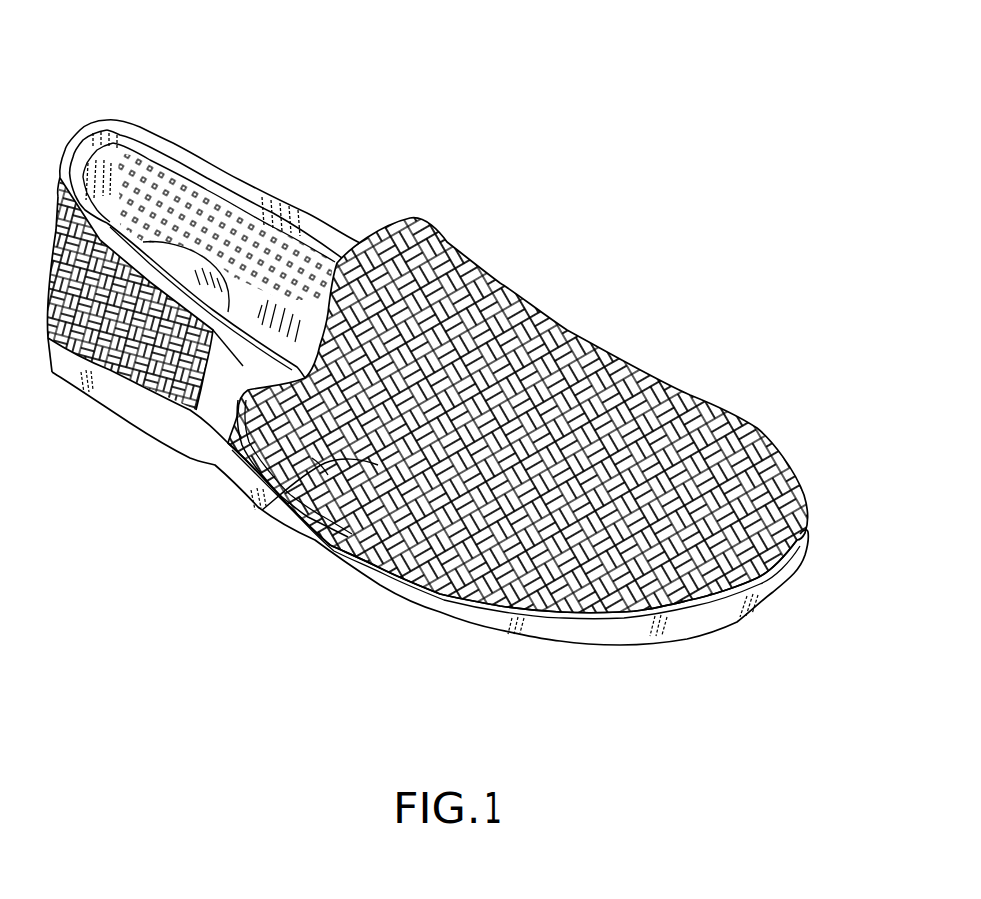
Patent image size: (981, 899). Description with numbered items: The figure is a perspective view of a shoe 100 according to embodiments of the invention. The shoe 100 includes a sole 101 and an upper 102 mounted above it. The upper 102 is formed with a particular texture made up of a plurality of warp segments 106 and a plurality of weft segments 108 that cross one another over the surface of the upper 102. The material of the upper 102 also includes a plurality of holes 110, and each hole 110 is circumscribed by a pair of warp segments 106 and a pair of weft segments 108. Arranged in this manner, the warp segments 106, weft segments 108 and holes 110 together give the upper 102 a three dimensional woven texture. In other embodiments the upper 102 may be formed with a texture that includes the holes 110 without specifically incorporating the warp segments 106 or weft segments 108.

The shoe 100 is at (533, 138).
The sole 101 is at (410, 598).
The upper 102 is at (580, 424).
The warp segments 106 is at (320, 468).
The weft segments 108 is at (353, 552).
The holes 110 is at (262, 510).